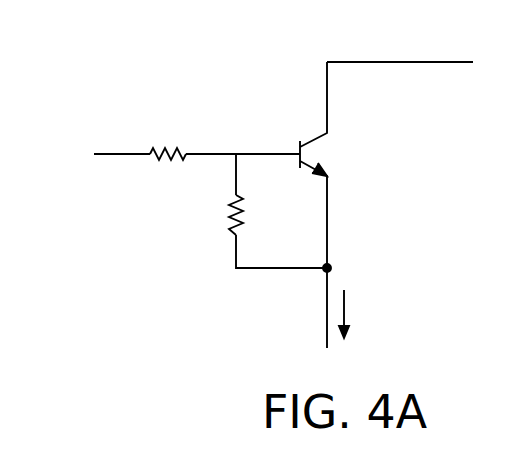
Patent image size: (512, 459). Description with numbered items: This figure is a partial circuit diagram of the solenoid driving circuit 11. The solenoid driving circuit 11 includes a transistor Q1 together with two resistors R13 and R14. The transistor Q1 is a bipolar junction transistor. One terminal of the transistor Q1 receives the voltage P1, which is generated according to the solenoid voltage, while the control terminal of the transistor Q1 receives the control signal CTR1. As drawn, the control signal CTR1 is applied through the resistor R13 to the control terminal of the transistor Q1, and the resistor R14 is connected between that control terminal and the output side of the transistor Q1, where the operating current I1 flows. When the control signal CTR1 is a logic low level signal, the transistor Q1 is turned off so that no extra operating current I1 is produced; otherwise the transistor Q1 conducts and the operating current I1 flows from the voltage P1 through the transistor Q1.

The solenoid driving circuit 11 is at (260, 199).
The control signal CTR1 is at (99, 154).
The resistor R13 is at (225, 140).
The resistor R14 is at (280, 213).
The transistor Q1 is at (306, 205).
The voltage P1 is at (400, 46).
The operating current I1 is at (354, 314).